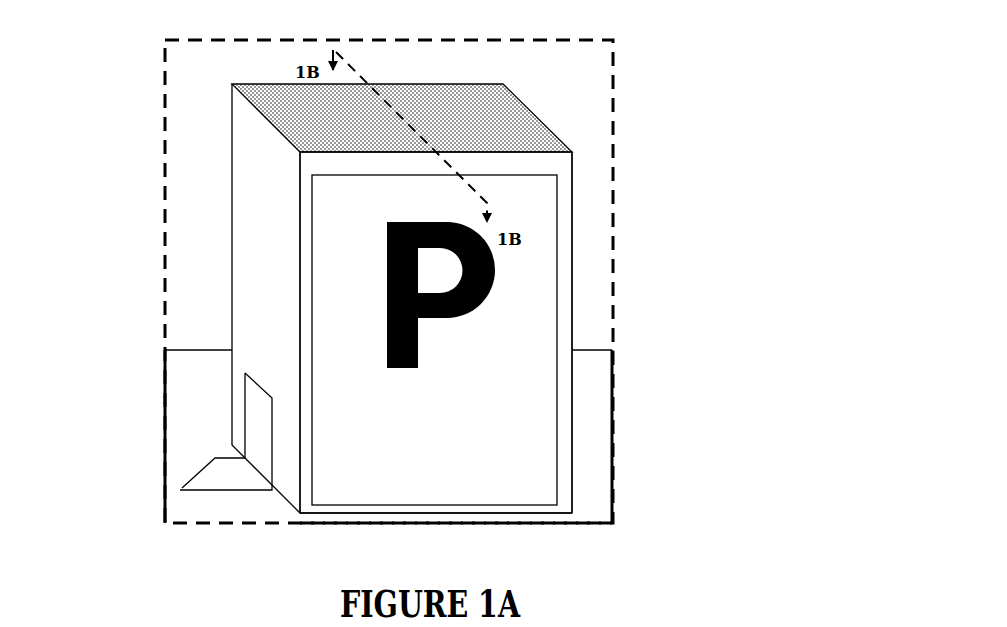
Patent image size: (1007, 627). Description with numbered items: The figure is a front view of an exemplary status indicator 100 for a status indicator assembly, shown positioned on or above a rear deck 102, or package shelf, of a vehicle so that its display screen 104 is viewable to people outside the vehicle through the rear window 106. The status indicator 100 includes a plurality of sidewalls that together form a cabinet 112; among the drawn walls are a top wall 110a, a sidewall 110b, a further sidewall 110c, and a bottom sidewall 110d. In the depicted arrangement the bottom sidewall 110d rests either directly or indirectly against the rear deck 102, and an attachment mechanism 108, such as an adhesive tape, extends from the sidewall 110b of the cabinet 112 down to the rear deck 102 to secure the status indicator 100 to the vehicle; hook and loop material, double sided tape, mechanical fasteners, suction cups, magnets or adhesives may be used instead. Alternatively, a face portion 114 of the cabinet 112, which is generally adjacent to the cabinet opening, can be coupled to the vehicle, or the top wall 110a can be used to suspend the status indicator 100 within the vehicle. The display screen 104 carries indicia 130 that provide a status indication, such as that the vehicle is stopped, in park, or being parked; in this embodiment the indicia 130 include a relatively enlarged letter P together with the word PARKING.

The status indicator 100 is at (584, 128).
The rear deck 102 is at (596, 425).
The display screen 104 is at (525, 345).
The rear window 106 is at (613, 185).
The attachment mechanism 108 is at (232, 478).
The top wall 110a is at (508, 115).
The sidewall 110b is at (270, 256).
The sidewall 110c is at (573, 252).
The bottom sidewall 110d is at (324, 522).
The cabinet 112 is at (245, 162).
The face portion 114 is at (562, 503).
The indicia 130 is at (486, 284).